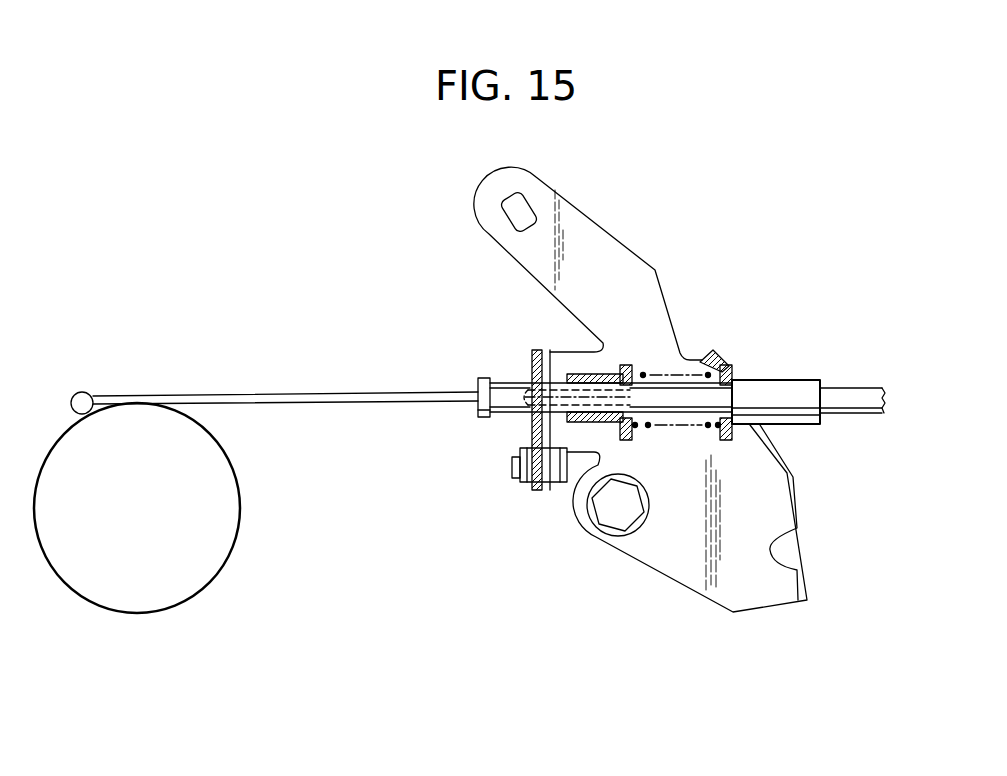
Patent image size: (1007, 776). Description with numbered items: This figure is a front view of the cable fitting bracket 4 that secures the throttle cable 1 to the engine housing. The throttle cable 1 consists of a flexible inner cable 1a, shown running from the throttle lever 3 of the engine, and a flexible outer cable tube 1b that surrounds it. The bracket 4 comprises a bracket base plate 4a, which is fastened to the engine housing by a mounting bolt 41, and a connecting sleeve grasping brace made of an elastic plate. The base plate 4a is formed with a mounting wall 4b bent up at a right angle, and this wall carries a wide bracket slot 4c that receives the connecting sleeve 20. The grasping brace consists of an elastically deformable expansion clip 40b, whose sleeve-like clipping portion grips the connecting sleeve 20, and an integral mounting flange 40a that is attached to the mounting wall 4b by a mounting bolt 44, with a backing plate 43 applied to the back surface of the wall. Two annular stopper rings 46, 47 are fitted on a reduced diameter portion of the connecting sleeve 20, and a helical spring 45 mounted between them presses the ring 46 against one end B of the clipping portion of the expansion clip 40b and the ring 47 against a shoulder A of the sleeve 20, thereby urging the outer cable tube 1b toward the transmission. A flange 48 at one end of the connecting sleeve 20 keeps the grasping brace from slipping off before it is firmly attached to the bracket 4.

The throttle cable 1 is at (841, 373).
The inner cable 1a is at (315, 394).
The outer cable tube 1b is at (500, 383).
The throttle lever 3 is at (230, 510).
The cable fitting bracket 4 is at (656, 590).
The bracket base plate 4a is at (760, 497).
The mounting wall 4b is at (535, 351).
The wide bracket slot 4c is at (562, 362).
The connecting sleeve 20 is at (790, 381).
The mounting flange 40a is at (540, 490).
The expansion clip 40b is at (603, 428).
The mounting bolt 41 is at (645, 518).
The backing plate 43 is at (528, 426).
The mounting bolt 44 is at (512, 465).
The helical spring 45 is at (703, 362).
The annular stopper ring 46 is at (728, 364).
The annular stopper ring 47 is at (624, 364).
The flange 48 is at (478, 386).
The shoulder A is at (742, 390).
The end of sleeve like clipping portion B is at (612, 376).